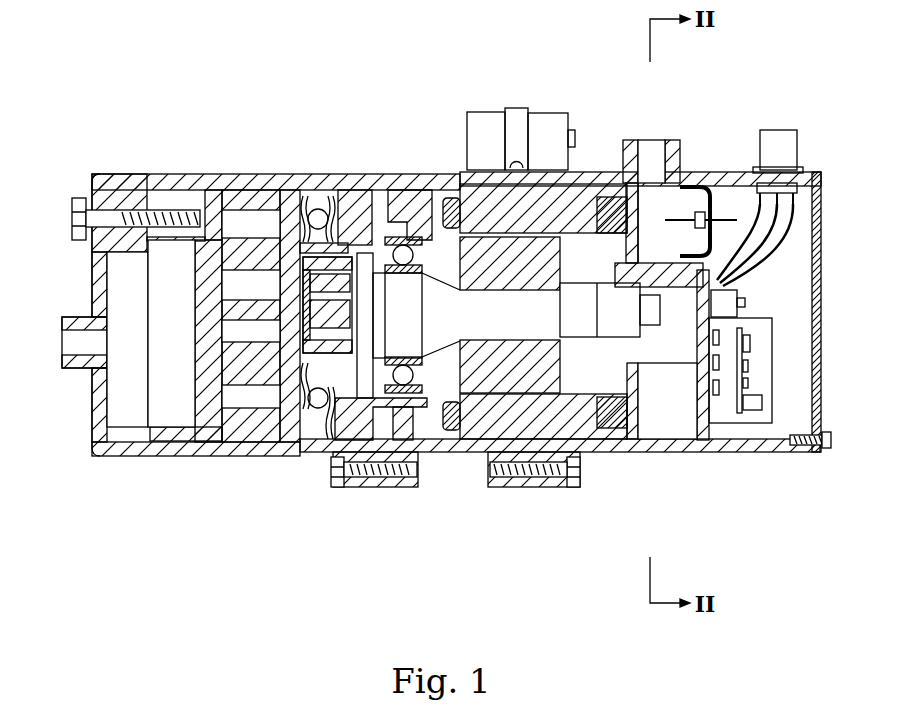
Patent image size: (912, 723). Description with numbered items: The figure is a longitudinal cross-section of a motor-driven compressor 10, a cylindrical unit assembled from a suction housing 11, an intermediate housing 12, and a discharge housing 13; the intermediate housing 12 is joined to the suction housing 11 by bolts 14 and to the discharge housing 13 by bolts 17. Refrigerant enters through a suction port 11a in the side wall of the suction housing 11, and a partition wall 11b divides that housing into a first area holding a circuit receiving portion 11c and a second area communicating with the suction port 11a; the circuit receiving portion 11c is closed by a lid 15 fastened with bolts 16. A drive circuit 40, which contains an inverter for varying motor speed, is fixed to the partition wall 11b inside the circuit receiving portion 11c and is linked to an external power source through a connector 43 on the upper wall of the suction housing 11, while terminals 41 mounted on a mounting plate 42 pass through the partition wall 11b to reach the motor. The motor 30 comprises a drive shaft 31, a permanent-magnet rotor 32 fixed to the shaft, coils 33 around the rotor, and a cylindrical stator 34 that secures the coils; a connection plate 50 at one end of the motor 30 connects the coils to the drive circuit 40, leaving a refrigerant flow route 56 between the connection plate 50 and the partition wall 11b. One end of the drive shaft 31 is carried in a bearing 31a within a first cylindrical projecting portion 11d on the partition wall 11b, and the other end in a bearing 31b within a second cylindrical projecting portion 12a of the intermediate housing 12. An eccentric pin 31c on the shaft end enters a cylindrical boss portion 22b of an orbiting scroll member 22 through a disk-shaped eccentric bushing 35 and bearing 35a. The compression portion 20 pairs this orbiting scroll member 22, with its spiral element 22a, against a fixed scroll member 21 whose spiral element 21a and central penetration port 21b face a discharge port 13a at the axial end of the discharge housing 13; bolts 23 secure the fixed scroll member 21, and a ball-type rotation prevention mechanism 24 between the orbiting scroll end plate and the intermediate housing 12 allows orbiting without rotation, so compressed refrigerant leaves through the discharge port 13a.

The motor-driven compressor 10 is at (129, 162).
The suction housing 11 is at (686, 440).
The suction port 11a is at (655, 172).
The partition wall 11b is at (720, 442).
The circuit receiving portion 11c is at (800, 300).
The first cylindrical projecting portion 11d is at (665, 430).
The intermediate housing 12 is at (470, 430).
The second cylindrical projecting portion 12a is at (398, 448).
The discharge housing 13 is at (137, 457).
The discharge port 13a is at (84, 343).
The bolts 14 is at (578, 487).
The lid 15 is at (815, 172).
The bolts 16 is at (830, 450).
The bolts 17 is at (338, 472).
The compression portion 20 is at (230, 428).
The fixed scroll member 21 is at (183, 200).
The spiral element 21a is at (245, 250).
The penetration port 21b is at (198, 307).
The orbiting scroll member 22 is at (290, 403).
The spiral element 22a is at (258, 402).
The cylindrical boss portion 22b is at (350, 220).
The bolts 23 is at (78, 198).
The rotation prevention mechanism 24 is at (320, 257).
The motor 30 is at (445, 377).
The drive shaft 31 is at (488, 453).
The bearing 31a is at (612, 440).
The bearing 31b is at (400, 205).
The eccentric pin 31c is at (293, 190).
The rotor 32 is at (525, 258).
The coils 33 is at (448, 210).
The stator 34 is at (487, 215).
The eccentric bushing 35 is at (366, 462).
The bearing 35a is at (333, 200).
The drive circuit 40 is at (777, 412).
The terminals 41 is at (712, 210).
The mounting plate 42 is at (718, 240).
The connector 43 is at (773, 128).
The connection plate 50 is at (625, 215).
The refrigerant flow route 56 is at (653, 207).